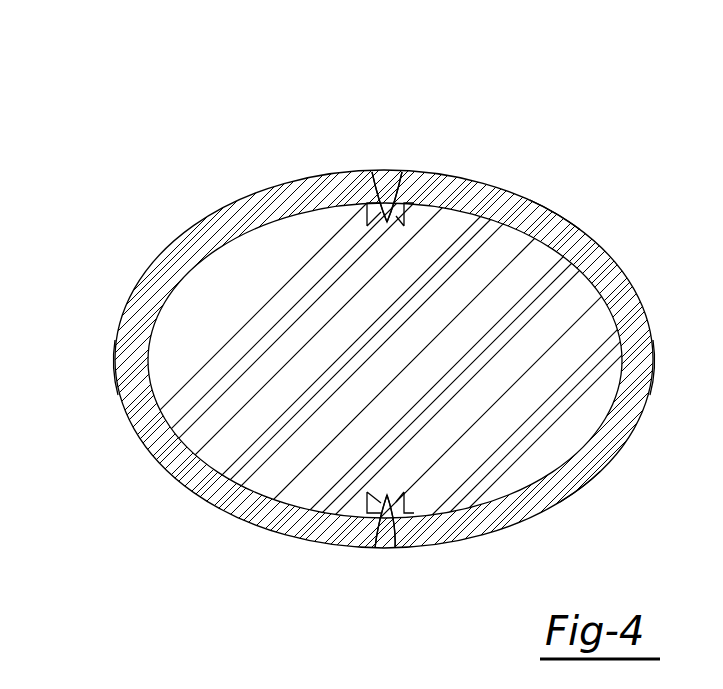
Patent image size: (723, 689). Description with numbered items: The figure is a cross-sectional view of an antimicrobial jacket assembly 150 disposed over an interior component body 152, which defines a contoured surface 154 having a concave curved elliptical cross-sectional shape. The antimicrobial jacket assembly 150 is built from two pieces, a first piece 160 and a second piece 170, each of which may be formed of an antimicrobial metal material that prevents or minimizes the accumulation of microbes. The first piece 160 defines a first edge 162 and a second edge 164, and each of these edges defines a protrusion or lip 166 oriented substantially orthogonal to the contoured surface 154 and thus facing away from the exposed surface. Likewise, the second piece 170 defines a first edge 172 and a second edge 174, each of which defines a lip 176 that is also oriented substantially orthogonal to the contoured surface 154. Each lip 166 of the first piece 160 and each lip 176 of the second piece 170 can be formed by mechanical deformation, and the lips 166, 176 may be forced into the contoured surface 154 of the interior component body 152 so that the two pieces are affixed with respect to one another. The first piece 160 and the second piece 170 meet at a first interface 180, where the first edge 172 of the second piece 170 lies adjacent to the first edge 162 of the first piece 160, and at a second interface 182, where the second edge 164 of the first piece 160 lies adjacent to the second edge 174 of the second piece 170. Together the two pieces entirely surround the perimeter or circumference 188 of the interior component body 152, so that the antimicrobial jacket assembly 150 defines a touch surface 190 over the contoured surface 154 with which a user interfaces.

The antimicrobial jacket assembly 150 is at (184, 116).
The interior component body 152 is at (538, 262).
The contoured surface 154 is at (628, 322).
The first piece 160 is at (157, 282).
The first edge 162 is at (371, 170).
The second edge 164 is at (377, 550).
The lip 166 is at (365, 201).
The second piece 170 is at (538, 222).
The first edge 172 is at (399, 172).
The second edge 174 is at (393, 548).
The lip 176 is at (402, 217).
The first interface 180 is at (388, 158).
The second interface 182 is at (356, 572).
The perimeter or circumference 188 is at (577, 453).
The touch surface 190 is at (115, 373).